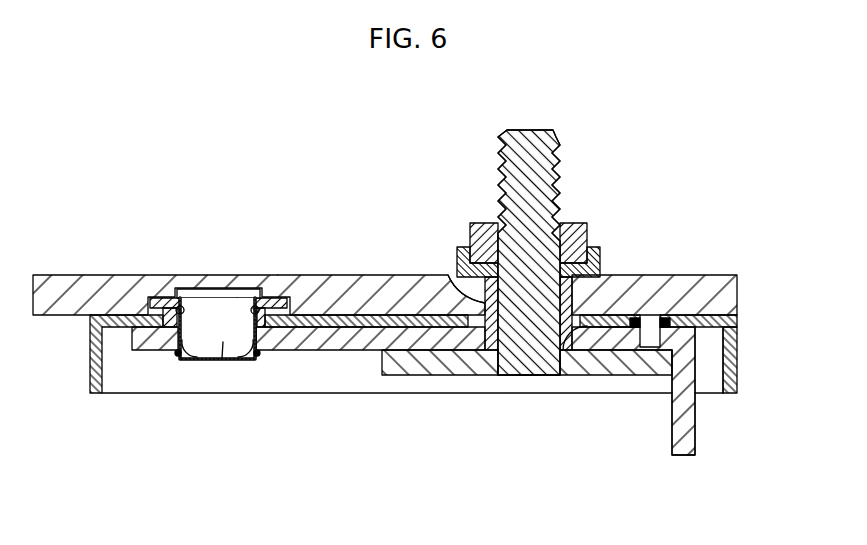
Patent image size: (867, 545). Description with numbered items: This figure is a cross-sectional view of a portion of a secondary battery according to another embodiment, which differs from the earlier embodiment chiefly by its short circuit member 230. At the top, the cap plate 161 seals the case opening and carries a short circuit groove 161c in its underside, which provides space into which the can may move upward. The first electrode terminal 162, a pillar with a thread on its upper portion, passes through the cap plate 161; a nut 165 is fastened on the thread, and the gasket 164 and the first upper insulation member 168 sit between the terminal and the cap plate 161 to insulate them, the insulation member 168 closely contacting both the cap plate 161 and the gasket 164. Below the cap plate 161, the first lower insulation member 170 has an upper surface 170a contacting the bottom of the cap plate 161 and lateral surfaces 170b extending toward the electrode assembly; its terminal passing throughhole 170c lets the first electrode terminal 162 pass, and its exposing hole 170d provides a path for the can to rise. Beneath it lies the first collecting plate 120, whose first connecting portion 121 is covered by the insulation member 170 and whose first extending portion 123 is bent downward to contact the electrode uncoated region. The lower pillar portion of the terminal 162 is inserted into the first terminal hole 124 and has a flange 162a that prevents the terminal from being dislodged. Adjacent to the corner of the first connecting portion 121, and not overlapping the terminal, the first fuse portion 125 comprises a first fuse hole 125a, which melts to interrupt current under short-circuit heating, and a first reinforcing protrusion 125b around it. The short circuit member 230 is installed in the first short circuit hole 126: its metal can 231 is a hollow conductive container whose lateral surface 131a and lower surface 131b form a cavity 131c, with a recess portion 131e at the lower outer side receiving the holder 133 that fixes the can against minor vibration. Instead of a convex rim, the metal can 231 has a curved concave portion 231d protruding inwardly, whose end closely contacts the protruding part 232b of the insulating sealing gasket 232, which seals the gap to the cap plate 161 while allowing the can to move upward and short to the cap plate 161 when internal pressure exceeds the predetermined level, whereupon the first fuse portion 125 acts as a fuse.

The first collecting plate 120 is at (700, 374).
The first connecting portion 121 is at (614, 340).
The first extending portion 123 is at (690, 426).
The first terminal hole 124 is at (500, 356).
The first fuse portion 125 is at (695, 249).
The first fuse hole 125a is at (652, 330).
The first reinforcing protrusion 125b is at (667, 316).
The first short circuit hole 126 is at (262, 355).
The lateral surface 131a is at (195, 358).
The lower surface 131b is at (207, 362).
The cavity 131c is at (223, 345).
The recess portion 131e is at (190, 361).
The holder 133 is at (298, 373).
The cap plate 161 is at (382, 252).
The short circuit groove 161c is at (278, 275).
The first electrode terminal 162 is at (521, 267).
The flange 162a is at (440, 360).
The gasket 164 is at (448, 276).
The nut 165 is at (572, 223).
The first upper insulation member 168 is at (459, 247).
The first lower insulation member 170 is at (485, 362).
The upper surface 170a is at (712, 318).
The lateral surfaces 170b is at (733, 344).
The terminal passing throughhole 170c is at (577, 352).
The exposing hole 170d is at (272, 346).
The short circuit member 230 is at (193, 349).
The metal can 231 is at (193, 412).
The concave portion 231d is at (183, 357).
The sealing gasket 232 is at (165, 297).
The protruding part 232b is at (192, 289).